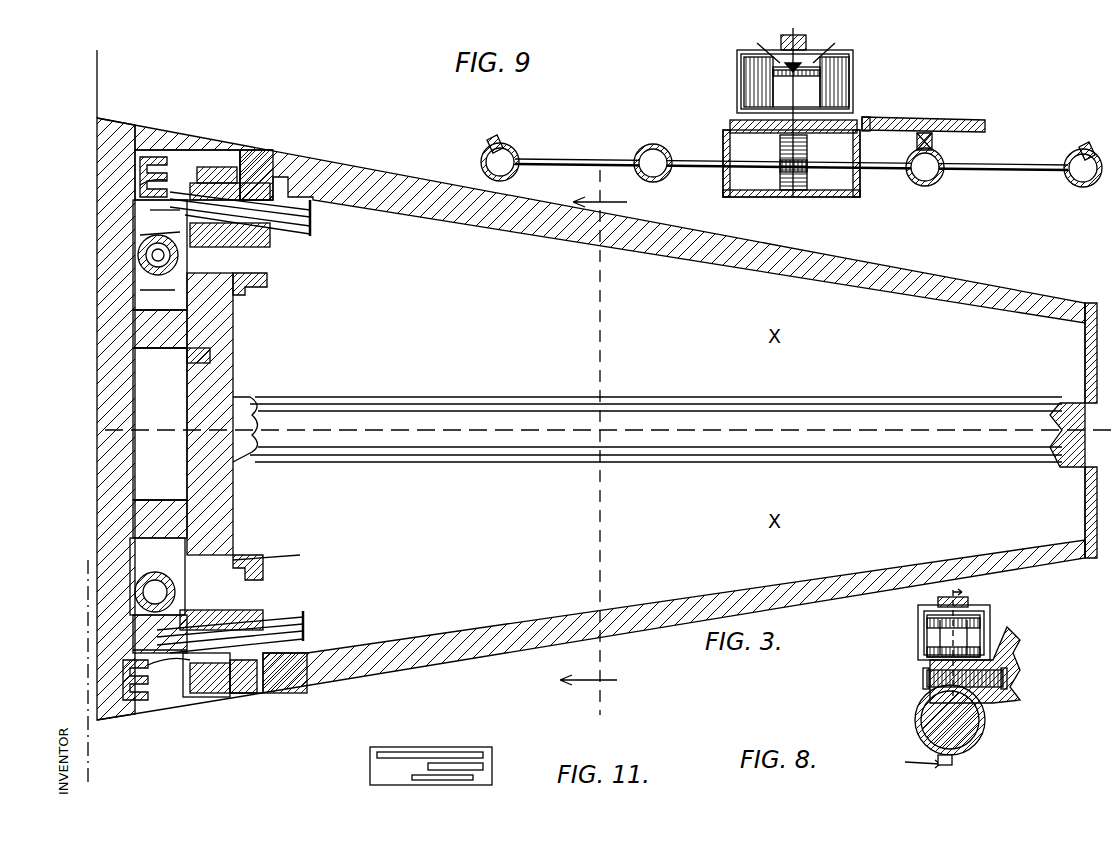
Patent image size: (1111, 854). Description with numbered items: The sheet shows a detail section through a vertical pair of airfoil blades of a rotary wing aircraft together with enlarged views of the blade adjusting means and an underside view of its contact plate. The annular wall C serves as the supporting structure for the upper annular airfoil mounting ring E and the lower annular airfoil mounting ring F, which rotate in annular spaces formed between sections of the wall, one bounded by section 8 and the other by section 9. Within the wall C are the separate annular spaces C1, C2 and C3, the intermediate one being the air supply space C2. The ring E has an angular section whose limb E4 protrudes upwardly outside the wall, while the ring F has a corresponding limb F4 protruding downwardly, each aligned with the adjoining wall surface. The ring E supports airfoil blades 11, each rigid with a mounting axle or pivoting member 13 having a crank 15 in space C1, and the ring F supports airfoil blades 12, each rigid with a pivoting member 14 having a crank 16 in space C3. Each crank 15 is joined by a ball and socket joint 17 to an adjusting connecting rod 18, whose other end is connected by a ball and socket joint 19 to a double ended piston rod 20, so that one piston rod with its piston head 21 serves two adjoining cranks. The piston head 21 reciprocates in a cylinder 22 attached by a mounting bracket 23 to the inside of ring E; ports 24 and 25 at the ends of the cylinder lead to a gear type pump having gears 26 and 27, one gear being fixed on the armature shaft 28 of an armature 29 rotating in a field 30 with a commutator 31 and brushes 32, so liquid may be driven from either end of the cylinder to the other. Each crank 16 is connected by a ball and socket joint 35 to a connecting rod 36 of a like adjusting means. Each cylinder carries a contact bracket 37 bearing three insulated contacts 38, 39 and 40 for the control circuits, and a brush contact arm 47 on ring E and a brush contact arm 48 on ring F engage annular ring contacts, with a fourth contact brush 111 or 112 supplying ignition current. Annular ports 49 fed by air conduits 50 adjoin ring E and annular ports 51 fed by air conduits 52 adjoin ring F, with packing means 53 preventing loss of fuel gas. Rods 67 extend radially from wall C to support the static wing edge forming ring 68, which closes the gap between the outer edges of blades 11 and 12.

In FIG. 9, the section of the annular wall 8 is at (781, 40).
In FIG. 3, the section of the annular wall 9 is at (150, 210).
In FIG. 8, the section of the annular wall 9 is at (953, 595).
In FIG. 3, the airfoil blade 11 is at (420, 183).
In FIG. 3, the airfoil blade 12 is at (440, 670).
In FIG. 3, the mounting axle or pivoting member 13 is at (312, 232).
In FIG. 3, the mounting axle or pivoting member 14 is at (290, 612).
In FIG. 3, the crank 15 is at (140, 235).
In FIG. 9, the crank 15 is at (505, 140).
In FIG. 3, the crank 16 is at (140, 640).
In FIG. 3, the ball and socket or universal joint 17 is at (140, 268).
In FIG. 9, the ball and socket or universal joint 17 is at (487, 144).
In FIG. 3, the adjusting connecting rod 18 is at (138, 258).
In FIG. 9, the adjusting connecting rod 18 is at (545, 158).
In FIG. 9, the ball and socket joint 19 is at (655, 144).
In FIG. 9, the piston rod 20 is at (723, 160).
In FIG. 9, the piston head 21 is at (818, 182).
In FIG. 8, the piston head 21 is at (925, 718).
In FIG. 9, the cylinder 22 is at (723, 183).
In FIG. 8, the cylinder 22 is at (985, 735).
In FIG. 8, the mounting bracket 23 is at (1007, 633).
In FIG. 9, the port 24 is at (745, 122).
In FIG. 9, the port 25 is at (875, 118).
In FIG. 9, the pump gear 26 is at (780, 170).
In FIG. 8, the pump gear 26 is at (927, 680).
In FIG. 8, the pump gear 27 is at (1010, 690).
In FIG. 9, the armature shaft 28 is at (806, 40).
In FIG. 8, the armature shaft 28 is at (968, 600).
In FIG. 9, the armature 29 is at (860, 110).
In FIG. 8, the armature 29 is at (924, 628).
In FIG. 9, the field 30 is at (737, 66).
In FIG. 9, the commutator 31 is at (820, 80).
In FIG. 9, the brushes 32 is at (744, 62).
In FIG. 3, the ball and socket joint 35 is at (162, 420).
In FIG. 3, the connecting rod 36 is at (157, 576).
In FIG. 9, the contact bracket 37 is at (950, 120).
In FIG. 11, the contact bracket 37 is at (492, 750).
In FIG. 11, the contact 38 is at (492, 782).
In FIG. 11, the contact 39 is at (484, 766).
In FIG. 11, the contact 40 is at (408, 755).
In FIG. 3, the brush contact arm 47 is at (160, 165).
In FIG. 3, the brush contact arm 48 is at (170, 700).
In FIG. 3, the annular port or passage 49 is at (217, 167).
In FIG. 3, the air conduit 50 is at (233, 335).
In FIG. 3, the annular port or passage 51 is at (263, 575).
In FIG. 3, the air conduit 52 is at (235, 520).
In FIG. 3, the packing means 53 is at (250, 150).
In FIG. 3, the support rod 67 is at (465, 462).
In FIG. 3, the static wing edge forming ring 68 is at (1083, 338).
In FIG. 3, the contact brush 111 is at (140, 185).
In FIG. 3, the contact brush 112 is at (135, 650).
In FIG. 3, the annular wall C is at (235, 372).
In FIG. 3, the space C1 is at (160, 318).
In FIG. 3, the air supply space C2 is at (145, 375).
In FIG. 3, the space C3 is at (160, 424).
In FIG. 3, the upper annular airfoil mounting ring E is at (262, 248).
In FIG. 3, the section of mounting ring E E4 is at (265, 150).
In FIG. 3, the lower annular airfoil mounting ring F is at (263, 595).
In FIG. 3, the section of mounting ring F F4 is at (255, 700).